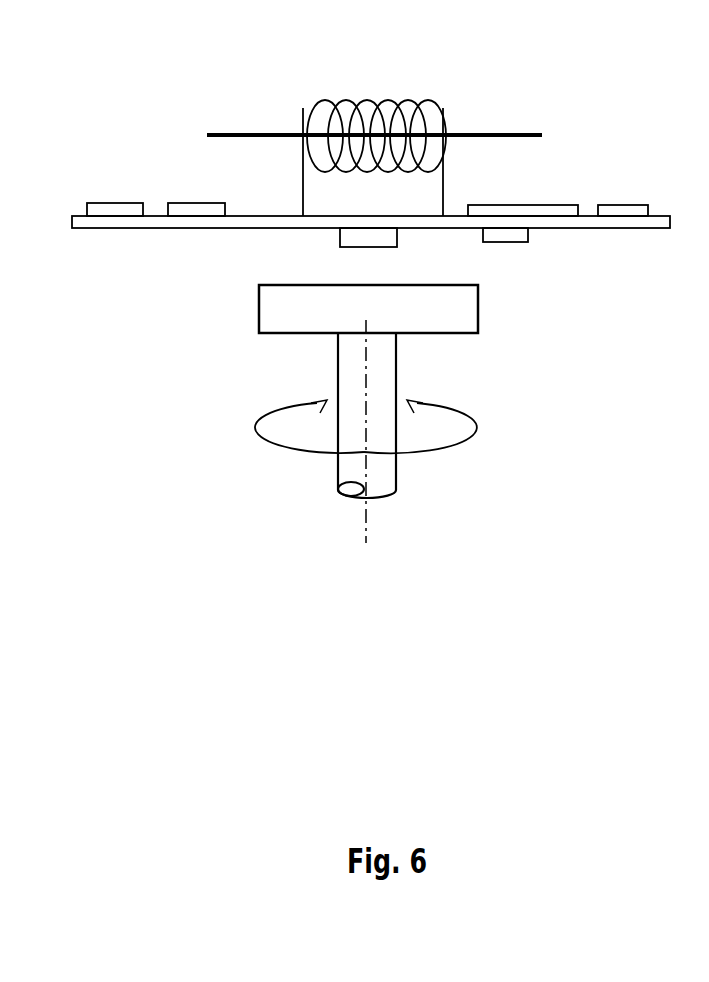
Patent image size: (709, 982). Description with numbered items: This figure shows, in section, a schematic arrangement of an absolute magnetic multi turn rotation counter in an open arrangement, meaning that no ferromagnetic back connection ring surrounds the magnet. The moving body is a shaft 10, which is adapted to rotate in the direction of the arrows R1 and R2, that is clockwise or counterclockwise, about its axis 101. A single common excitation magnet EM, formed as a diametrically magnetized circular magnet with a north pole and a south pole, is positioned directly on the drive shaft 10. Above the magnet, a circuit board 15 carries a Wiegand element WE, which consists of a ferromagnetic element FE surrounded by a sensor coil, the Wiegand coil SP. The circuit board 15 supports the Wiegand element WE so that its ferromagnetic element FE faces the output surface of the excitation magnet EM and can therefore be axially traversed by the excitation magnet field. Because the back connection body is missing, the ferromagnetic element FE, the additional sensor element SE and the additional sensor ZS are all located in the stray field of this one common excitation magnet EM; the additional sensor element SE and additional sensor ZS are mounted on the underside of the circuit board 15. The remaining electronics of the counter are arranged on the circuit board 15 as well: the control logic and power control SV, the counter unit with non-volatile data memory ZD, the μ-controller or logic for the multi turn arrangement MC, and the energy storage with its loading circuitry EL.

The circuit board 15 is at (197, 223).
The control logic and power control SV is at (113, 210).
The counter unit with non-volatile data memory ZD is at (193, 210).
The ferromagnetic element FE is at (270, 132).
The Wiegand coil SP is at (320, 122).
The Wiegand element WE is at (458, 115).
The additional sensor ZS is at (362, 233).
The μ-controller or logic for multi turn arrangement MC is at (525, 212).
The energy storage with loading circuitry EL is at (625, 210).
The additional sensor element SE is at (510, 235).
The excitation magnet EM is at (422, 322).
The shaft 10 is at (383, 477).
The rotation axis 101 is at (363, 512).
The arrow R1 is at (304, 426).
The arrow R2 is at (427, 426).